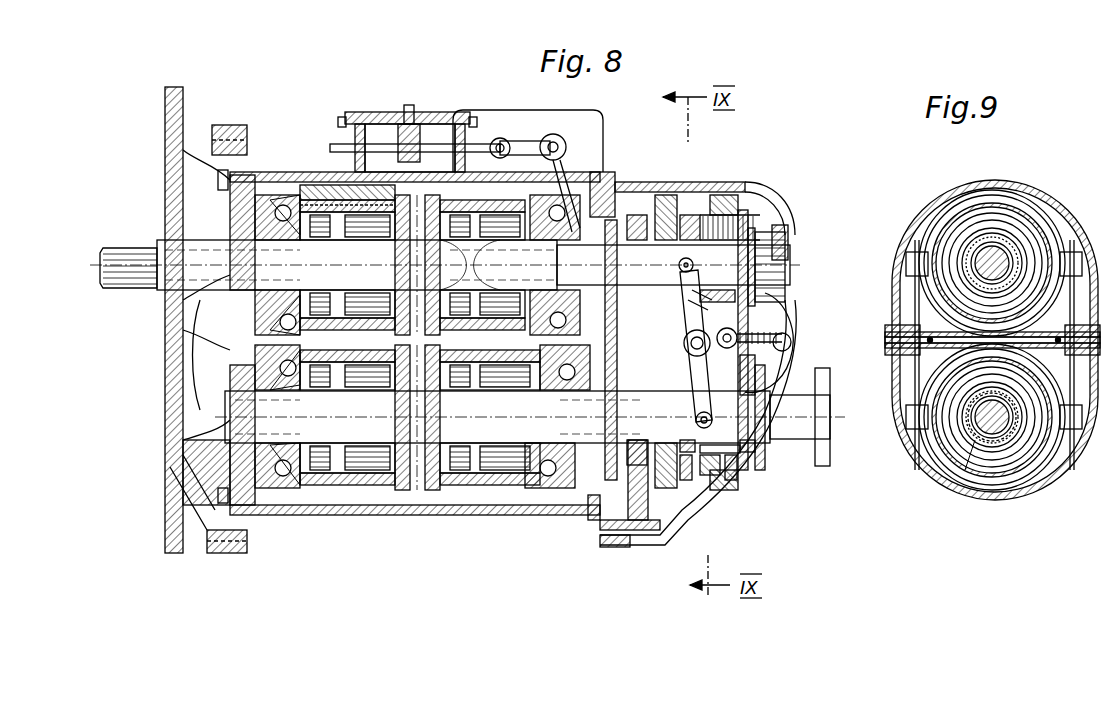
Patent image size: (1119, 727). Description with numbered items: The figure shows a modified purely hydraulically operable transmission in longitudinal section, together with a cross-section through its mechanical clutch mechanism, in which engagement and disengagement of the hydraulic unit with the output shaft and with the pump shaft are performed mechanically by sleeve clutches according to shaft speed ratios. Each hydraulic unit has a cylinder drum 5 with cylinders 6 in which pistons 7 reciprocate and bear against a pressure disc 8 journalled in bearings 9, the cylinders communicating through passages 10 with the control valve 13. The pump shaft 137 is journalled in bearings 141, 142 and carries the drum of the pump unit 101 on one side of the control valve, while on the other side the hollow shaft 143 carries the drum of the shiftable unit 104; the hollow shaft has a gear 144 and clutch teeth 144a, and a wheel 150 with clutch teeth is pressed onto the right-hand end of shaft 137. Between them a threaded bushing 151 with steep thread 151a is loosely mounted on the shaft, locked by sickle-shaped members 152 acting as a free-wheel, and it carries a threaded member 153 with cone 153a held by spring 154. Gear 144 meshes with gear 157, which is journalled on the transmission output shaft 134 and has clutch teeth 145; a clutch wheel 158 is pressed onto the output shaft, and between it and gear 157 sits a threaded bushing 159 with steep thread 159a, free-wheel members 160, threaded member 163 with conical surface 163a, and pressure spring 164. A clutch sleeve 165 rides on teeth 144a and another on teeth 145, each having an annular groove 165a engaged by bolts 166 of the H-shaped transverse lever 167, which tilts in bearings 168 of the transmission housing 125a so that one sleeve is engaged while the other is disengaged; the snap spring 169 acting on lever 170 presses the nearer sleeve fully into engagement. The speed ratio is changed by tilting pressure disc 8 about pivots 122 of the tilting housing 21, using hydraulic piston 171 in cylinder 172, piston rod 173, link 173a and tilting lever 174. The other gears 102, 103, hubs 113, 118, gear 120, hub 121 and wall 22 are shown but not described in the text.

In FIG. 8, the cylinder drum 5 is at (318, 198).
In FIG. 8, the cylinders 6 is at (372, 196).
In FIG. 8, the piston 7 is at (297, 198).
In FIG. 8, the pressure disc 8 is at (305, 470).
In FIG. 8, the bearings 9 is at (283, 205).
In FIG. 8, the passages 10 is at (440, 498).
In FIG. 8, the control valve 13 is at (395, 243).
In FIG. 8, the tilting housing 21 is at (598, 198).
In FIG. 8, the housing cover wall 22 is at (620, 212).
In FIG. 8, the pump unit 101 is at (338, 192).
In FIG. 8, the lower left gear 102 is at (360, 500).
In FIG. 8, the lower right gear 103 is at (470, 500).
In FIG. 8, the shiftable unit 104 is at (480, 190).
In FIG. 8, the hub 113 is at (420, 193).
In FIG. 8, the lower hub 118 is at (410, 498).
In FIG. 8, the upper right gear 120 is at (441, 175).
In FIG. 8, the bearing hub 121 is at (240, 312).
In FIG. 8, the pivots 122 is at (222, 178).
In FIG. 8, the transmission housing 125a is at (772, 222).
In FIG. 9, the transmission housing 125a is at (897, 418).
In FIG. 8, the transmission output shaft 134 is at (772, 404).
In FIG. 9, the transmission output shaft 134 is at (1015, 425).
In FIG. 8, the pump driving shaft 137 is at (130, 245).
In FIG. 9, the pump driving shaft 137 is at (1018, 268).
In FIG. 8, the bearing 141 is at (170, 305).
In FIG. 8, the bearing 142 is at (790, 232).
In FIG. 8, the hollow drive shaft 143 is at (608, 232).
In FIG. 8, the gear 144 is at (640, 213).
In FIG. 8, the clutch teeth 144a is at (680, 215).
In FIG. 8, the clutch teeth 145 is at (650, 452).
In FIG. 8, the wheel with clutch teeth 150 is at (752, 220).
In FIG. 8, the threaded bushing 151 is at (788, 268).
In FIG. 9, the threaded bushing 151 is at (1010, 262).
In FIG. 8, the steep thread 151a is at (790, 258).
In FIG. 9, the sickle-shaped members 152 is at (1003, 262).
In FIG. 8, the threaded member 153 is at (680, 264).
In FIG. 8, the cone 153a is at (706, 232).
In FIG. 8, the spring 154 is at (788, 276).
In FIG. 8, the gear 157 is at (662, 540).
In FIG. 8, the clutch wheel 158 is at (760, 447).
In FIG. 8, the threaded bushing 159 is at (725, 450).
In FIG. 9, the threaded bushing 159 is at (995, 441).
In FIG. 8, the steep thread 159a is at (683, 440).
In FIG. 9, the sickle-shaped members 160 is at (967, 422).
In FIG. 8, the threaded member 163 is at (690, 480).
In FIG. 8, the conical surface 163a is at (720, 470).
In FIG. 8, the pressure spring 164 is at (737, 475).
In FIG. 8, the clutch sleeve 165 is at (710, 305).
In FIG. 9, the clutch sleeve 165 is at (1005, 235).
In FIG. 8, the annular groove 165a is at (722, 220).
In FIG. 9, the annular groove 165a is at (1040, 225).
In FIG. 8, the bolts 166 is at (766, 425).
In FIG. 9, the bolts 166 is at (932, 235).
In FIG. 8, the transverse lever 167 is at (756, 372).
In FIG. 9, the transverse lever 167 is at (900, 285).
In FIG. 9, the bearings 168 is at (905, 335).
In FIG. 8, the snap spring 169 is at (762, 338).
In FIG. 8, the lever 170 is at (790, 298).
In FIG. 9, the lever 170 is at (912, 300).
In FIG. 8, the hydraulic piston 171 is at (410, 165).
In FIG. 8, the cylinder 172 is at (362, 122).
In FIG. 8, the piston rod 173 is at (442, 138).
In FIG. 8, the link 173a is at (532, 146).
In FIG. 8, the tilting lever 174 is at (560, 187).